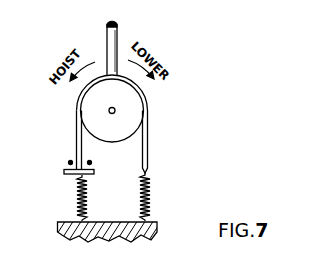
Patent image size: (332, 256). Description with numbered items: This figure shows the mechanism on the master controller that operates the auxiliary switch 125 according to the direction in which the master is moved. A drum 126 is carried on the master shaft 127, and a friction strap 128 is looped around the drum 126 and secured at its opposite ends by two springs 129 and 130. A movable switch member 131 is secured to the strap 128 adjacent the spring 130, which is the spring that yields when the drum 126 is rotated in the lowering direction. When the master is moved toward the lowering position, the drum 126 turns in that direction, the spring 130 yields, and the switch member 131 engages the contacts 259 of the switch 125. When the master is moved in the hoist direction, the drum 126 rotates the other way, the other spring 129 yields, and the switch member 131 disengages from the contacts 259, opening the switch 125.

The auxiliary switch 125 is at (75, 158).
The drum 126 is at (132, 108).
The master shaft 127 is at (118, 34).
The friction strap 128 is at (148, 148).
The spring 129 is at (151, 190).
The spring 130 is at (78, 205).
The movable switch member 131 is at (66, 174).
The contacts 259 is at (64, 162).